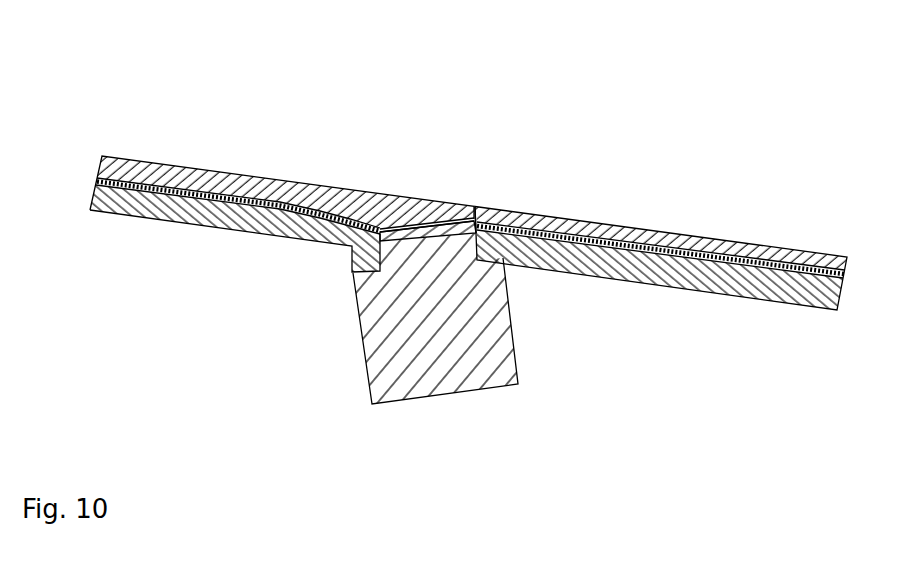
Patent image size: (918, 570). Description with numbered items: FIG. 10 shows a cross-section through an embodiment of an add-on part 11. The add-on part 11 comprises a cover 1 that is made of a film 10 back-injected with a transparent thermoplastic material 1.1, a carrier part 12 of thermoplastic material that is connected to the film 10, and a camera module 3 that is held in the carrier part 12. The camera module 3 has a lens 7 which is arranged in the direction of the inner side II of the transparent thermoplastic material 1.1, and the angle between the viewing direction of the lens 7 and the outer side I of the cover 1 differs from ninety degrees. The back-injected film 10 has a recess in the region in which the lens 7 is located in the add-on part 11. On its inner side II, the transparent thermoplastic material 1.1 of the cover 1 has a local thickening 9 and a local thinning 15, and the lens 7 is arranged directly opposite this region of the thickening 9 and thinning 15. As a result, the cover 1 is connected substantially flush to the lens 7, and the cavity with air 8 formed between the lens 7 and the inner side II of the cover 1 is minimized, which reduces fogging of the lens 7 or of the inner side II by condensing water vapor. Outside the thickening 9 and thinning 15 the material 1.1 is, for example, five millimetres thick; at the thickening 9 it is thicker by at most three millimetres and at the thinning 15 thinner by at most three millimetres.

The cover 1 is at (765, 247).
The transparent thermoplastic material 1.1 is at (155, 173).
The camera module 3 is at (453, 303).
The lens 7 is at (453, 233).
The cavity with air 8 is at (418, 229).
The local thickening 9 is at (360, 218).
The film 10 is at (197, 195).
The add-on part 11 is at (82, 107).
The carrier part 12 is at (93, 192).
The local thinning 15 is at (472, 212).
The outer side I is at (211, 172).
The inner side II is at (397, 229).